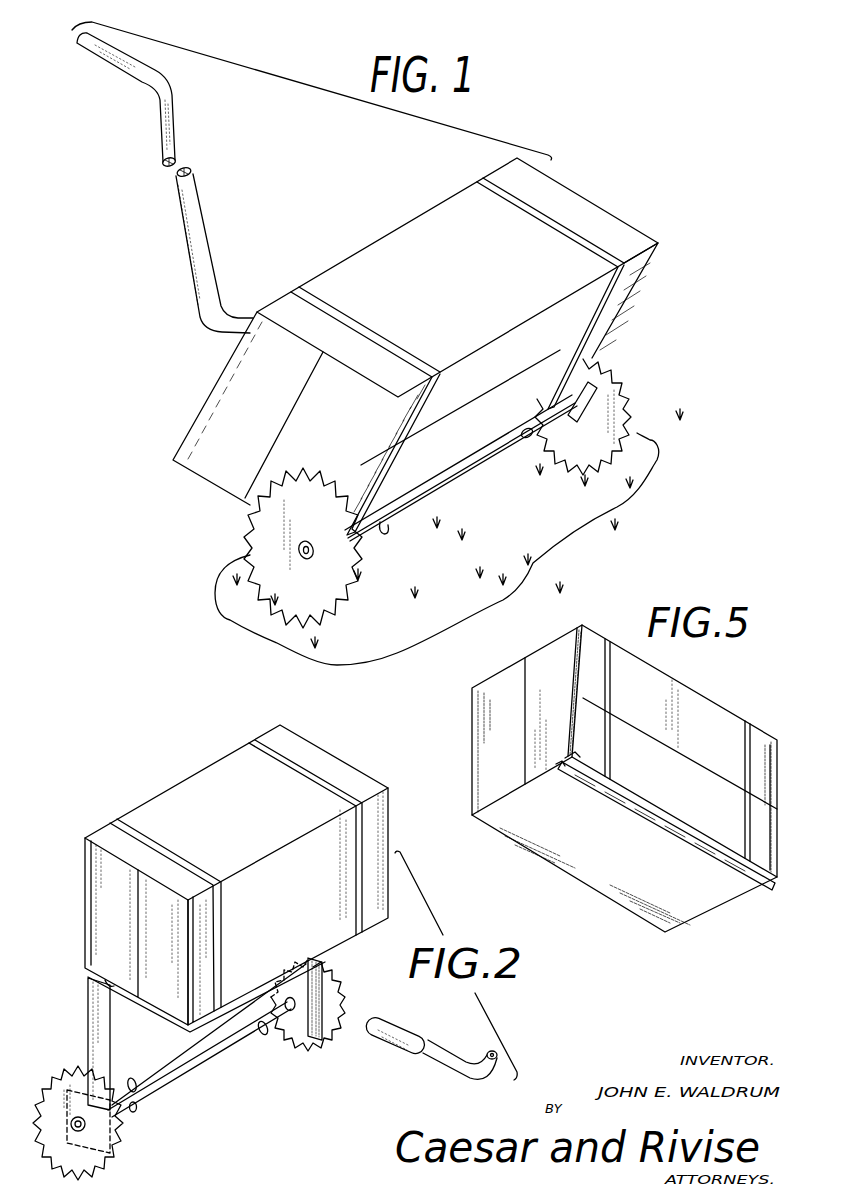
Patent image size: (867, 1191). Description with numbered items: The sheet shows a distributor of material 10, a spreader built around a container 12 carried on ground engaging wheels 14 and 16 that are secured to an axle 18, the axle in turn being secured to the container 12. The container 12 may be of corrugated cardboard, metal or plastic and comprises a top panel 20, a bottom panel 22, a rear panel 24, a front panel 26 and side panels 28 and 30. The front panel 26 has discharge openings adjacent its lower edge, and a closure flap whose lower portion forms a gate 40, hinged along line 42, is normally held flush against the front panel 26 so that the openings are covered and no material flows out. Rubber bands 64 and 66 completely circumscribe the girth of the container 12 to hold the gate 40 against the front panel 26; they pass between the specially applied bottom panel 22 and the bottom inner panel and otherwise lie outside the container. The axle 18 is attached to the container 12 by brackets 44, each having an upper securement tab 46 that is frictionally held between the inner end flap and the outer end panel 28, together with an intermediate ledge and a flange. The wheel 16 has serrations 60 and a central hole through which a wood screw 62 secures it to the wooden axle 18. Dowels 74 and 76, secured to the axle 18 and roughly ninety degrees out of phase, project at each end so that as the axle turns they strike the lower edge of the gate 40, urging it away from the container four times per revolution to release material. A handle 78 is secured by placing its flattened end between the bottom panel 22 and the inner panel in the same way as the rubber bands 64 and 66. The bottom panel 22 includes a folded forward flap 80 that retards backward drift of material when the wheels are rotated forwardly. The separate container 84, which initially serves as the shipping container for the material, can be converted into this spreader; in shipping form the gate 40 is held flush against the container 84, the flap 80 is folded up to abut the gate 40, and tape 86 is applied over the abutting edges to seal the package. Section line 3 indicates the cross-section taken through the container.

In FIG. 1, the distributor of material 10 is at (640, 190).
In FIG. 1, the container 12 is at (418, 346).
In FIG. 1, the ground engaging wheel 14 is at (250, 527).
In FIG. 1, the ground engaging wheel 16 is at (610, 377).
In FIG. 1, the axle 18 is at (473, 463).
In FIG. 1, the top panel 20 is at (507, 256).
In FIG. 5, the bottom panel 22 is at (708, 893).
In FIG. 2, the rear panel 24 is at (305, 913).
In FIG. 1, the front panel 26 is at (617, 303).
In FIG. 1, the side panel 28 is at (190, 434).
In FIG. 1, the side panel 30 is at (643, 230).
In FIG. 1, the gate 40 is at (603, 332).
In FIG. 1, the fold line 42 is at (443, 413).
In FIG. 2, the bracket 44 is at (186, 1056).
In FIG. 2, the upper securement tab 46 is at (103, 1040).
In FIG. 1, the serrations 60 is at (360, 610).
In FIG. 2, the wood screw 62 is at (76, 1132).
In FIG. 1, the rubber band 64 is at (385, 343).
In FIG. 1, the rubber band 66 is at (575, 237).
In FIG. 1, the dowel 74 is at (383, 530).
In FIG. 1, the dowel 76 is at (527, 440).
In FIG. 1, the handle 78 is at (172, 142).
In FIG. 5, the folded forward flap 80 is at (572, 753).
In FIG. 5, the container 84 is at (710, 700).
In FIG. 5, the tape 86 is at (613, 792).
In FIG. 1, the section line 3 is at (360, 208).